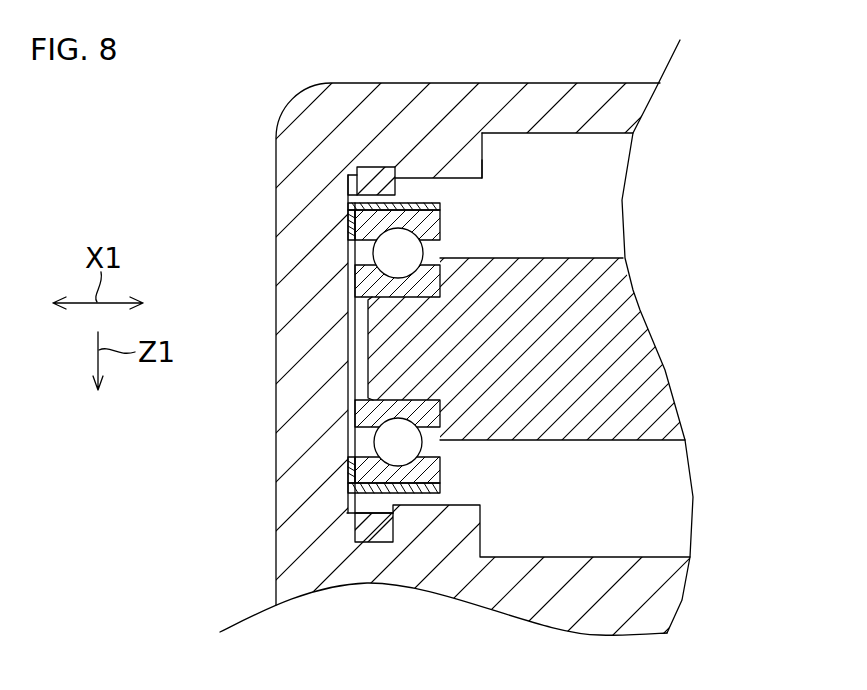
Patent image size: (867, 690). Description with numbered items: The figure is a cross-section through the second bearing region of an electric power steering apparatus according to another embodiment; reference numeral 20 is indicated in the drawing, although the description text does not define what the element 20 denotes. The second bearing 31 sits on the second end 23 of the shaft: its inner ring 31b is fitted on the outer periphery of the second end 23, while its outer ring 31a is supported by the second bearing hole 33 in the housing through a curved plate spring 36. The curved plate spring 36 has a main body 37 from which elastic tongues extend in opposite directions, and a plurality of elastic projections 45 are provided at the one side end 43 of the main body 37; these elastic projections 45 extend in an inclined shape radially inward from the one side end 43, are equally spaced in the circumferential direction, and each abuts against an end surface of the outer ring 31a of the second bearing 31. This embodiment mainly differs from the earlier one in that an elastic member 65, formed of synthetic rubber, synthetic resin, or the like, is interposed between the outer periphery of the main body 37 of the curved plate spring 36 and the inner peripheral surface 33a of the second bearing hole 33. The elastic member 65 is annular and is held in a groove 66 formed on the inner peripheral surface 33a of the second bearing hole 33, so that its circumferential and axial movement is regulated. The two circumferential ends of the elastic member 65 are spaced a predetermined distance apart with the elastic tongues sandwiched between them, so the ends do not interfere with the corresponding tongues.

The rotor 20 is at (582, 257).
The second end 23 is at (375, 348).
The second bearing 31 is at (372, 442).
The outer ring 31a is at (352, 469).
The inner ring 31b is at (368, 406).
The second bearing hole 33 is at (443, 179).
The inner peripheral surface 33a is at (476, 186).
The curved plate spring 36 is at (357, 496).
The main body 37 is at (404, 492).
The one side end 43 is at (347, 211).
The elastic projections 45 is at (347, 224).
The elastic member 65 is at (368, 186).
The groove 66 is at (376, 170).